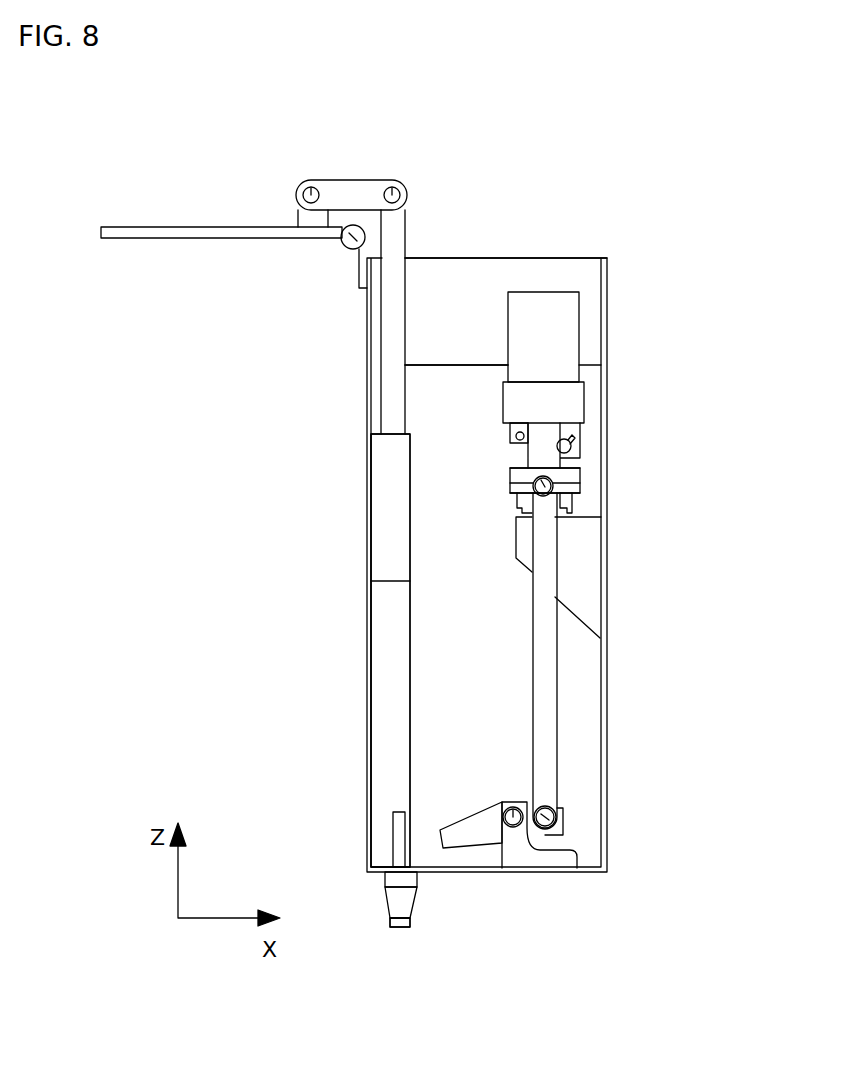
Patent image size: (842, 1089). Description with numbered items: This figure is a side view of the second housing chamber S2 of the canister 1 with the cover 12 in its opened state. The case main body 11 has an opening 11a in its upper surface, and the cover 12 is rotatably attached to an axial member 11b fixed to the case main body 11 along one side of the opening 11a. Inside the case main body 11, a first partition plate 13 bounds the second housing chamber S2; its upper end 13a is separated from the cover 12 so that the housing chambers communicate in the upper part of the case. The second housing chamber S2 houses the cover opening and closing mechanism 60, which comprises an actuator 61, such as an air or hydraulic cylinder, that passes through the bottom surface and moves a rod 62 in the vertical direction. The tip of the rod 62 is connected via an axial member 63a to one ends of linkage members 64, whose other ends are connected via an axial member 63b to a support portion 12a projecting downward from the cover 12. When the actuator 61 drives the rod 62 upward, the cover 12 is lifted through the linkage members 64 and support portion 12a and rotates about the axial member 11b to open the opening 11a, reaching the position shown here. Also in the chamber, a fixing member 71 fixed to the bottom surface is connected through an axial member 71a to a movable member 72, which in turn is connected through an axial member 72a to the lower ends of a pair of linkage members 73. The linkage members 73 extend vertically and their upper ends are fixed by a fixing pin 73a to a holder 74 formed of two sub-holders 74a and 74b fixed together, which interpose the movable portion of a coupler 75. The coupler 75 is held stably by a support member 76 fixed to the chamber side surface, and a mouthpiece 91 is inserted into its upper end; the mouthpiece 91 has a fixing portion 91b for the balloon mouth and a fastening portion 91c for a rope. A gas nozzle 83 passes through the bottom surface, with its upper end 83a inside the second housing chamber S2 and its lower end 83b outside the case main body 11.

The canister 1 is at (274, 591).
The case main body 11 is at (605, 707).
The opening 11a is at (547, 258).
The axial member 11b is at (352, 243).
The cover 12 is at (200, 242).
The support portion 12a is at (307, 215).
The first partition plate 13 is at (432, 395).
The upper end 13a is at (475, 360).
The cover opening and closing mechanism 60 is at (418, 628).
The actuator 61 is at (393, 510).
The rod 62 is at (393, 330).
The axial member 63a is at (393, 190).
The axial member 63b is at (311, 190).
The linkage members 64 is at (352, 193).
The fixing member 71 is at (535, 870).
The axial member 71a is at (513, 806).
The movable member 72 is at (478, 828).
The axial member 72a is at (556, 817).
The linkage members 73 is at (545, 655).
The fixing pin 73a is at (532, 486).
The holder 74 is at (688, 452).
The sub-holder 74a is at (572, 476).
The sub-holder 74b is at (572, 488).
The coupler 75 is at (563, 510).
The support member 76 is at (585, 565).
The gas nozzle 83 is at (375, 902).
The upper end 83a is at (400, 838).
The lower end 83b is at (405, 897).
The mouthpiece 91 is at (588, 298).
The fixing portion 91b is at (557, 345).
The fastening portion 91c is at (510, 433).
The second housing chamber S2 is at (454, 676).